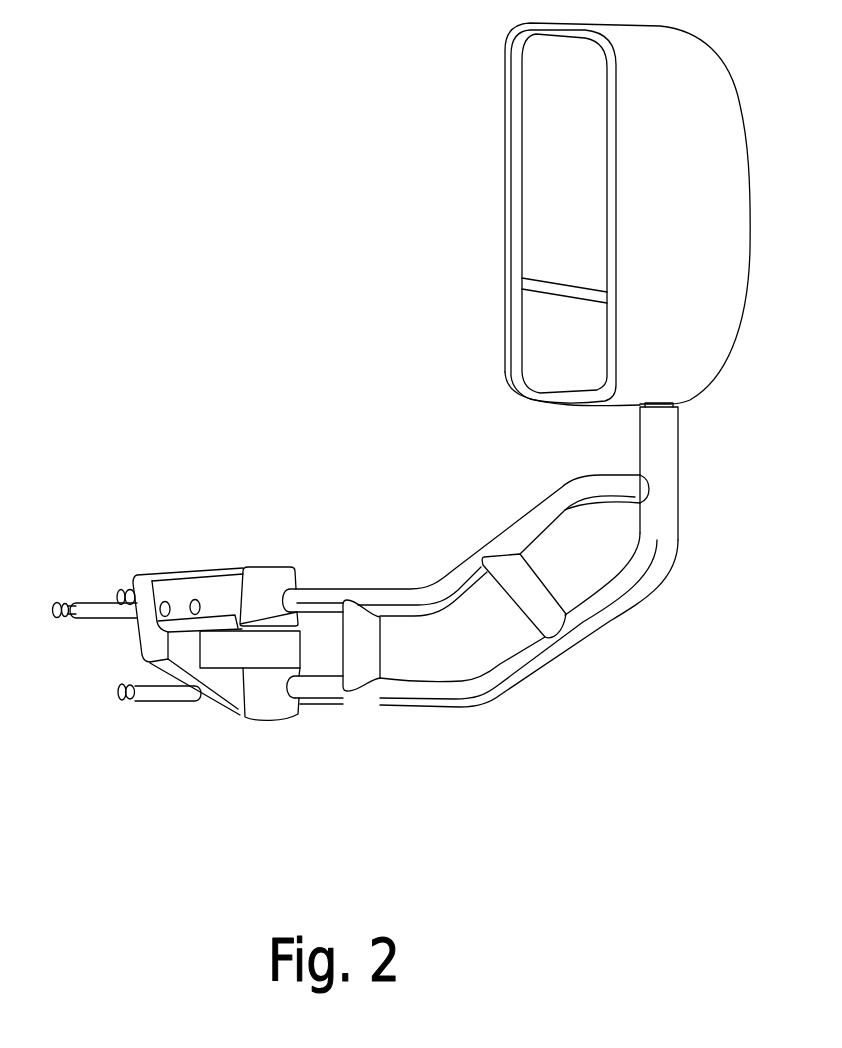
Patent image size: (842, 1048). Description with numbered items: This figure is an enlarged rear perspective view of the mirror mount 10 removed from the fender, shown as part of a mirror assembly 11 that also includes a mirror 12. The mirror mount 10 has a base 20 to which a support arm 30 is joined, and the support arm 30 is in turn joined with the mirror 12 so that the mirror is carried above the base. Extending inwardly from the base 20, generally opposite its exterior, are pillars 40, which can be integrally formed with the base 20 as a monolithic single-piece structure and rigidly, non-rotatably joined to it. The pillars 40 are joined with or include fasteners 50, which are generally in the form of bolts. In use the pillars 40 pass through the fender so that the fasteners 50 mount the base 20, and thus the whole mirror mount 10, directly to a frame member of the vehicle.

The mirror mount 10 is at (338, 737).
The mirror assembly 11 is at (680, 653).
The mirror 12 is at (750, 204).
The base 20 is at (210, 570).
The support arm 30 is at (528, 527).
The pillars 40 is at (100, 603).
The fasteners 50 is at (63, 618).